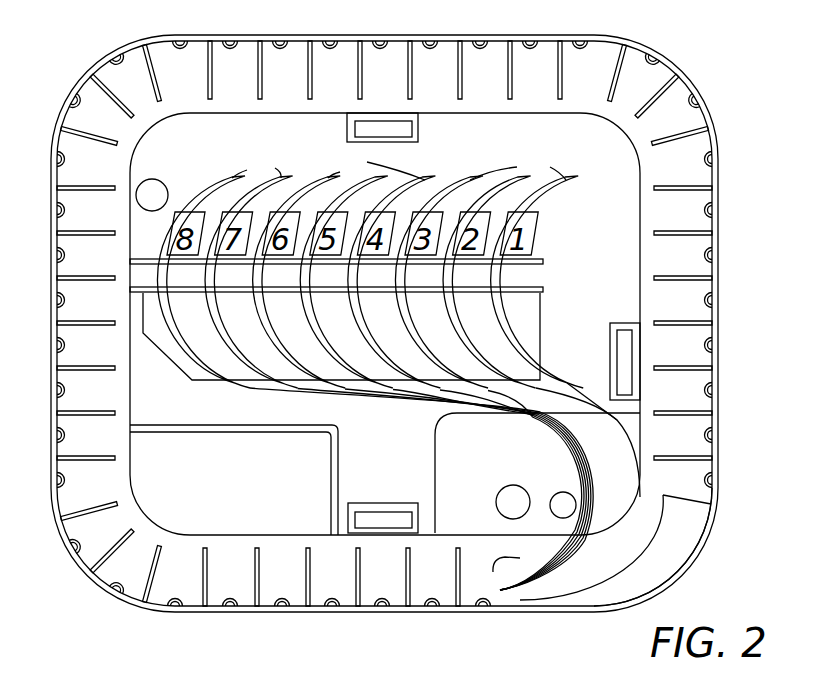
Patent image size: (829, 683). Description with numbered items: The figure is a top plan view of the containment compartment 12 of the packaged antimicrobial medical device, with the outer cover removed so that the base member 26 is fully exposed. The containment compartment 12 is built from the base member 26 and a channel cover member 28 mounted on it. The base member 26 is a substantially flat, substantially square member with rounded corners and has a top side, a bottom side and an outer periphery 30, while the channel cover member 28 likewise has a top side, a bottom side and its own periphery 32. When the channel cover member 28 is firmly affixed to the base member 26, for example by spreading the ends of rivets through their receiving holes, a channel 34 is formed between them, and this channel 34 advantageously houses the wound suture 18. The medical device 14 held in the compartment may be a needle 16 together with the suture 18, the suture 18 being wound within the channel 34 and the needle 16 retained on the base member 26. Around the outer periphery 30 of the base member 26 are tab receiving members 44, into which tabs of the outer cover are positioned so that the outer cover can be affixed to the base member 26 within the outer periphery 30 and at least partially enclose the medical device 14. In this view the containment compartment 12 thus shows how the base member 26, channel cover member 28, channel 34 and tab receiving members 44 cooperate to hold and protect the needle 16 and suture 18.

The containment compartment 12 is at (703, 115).
The medical device 14 is at (517, 312).
The needle 16 is at (399, 166).
The suture 18 is at (590, 436).
The base member 26 is at (683, 528).
The channel cover member 28 is at (690, 290).
The outer periphery 30 is at (47, 278).
The periphery 32 is at (498, 52).
The channel 34 is at (655, 555).
The tab receiving members 44 is at (390, 503).